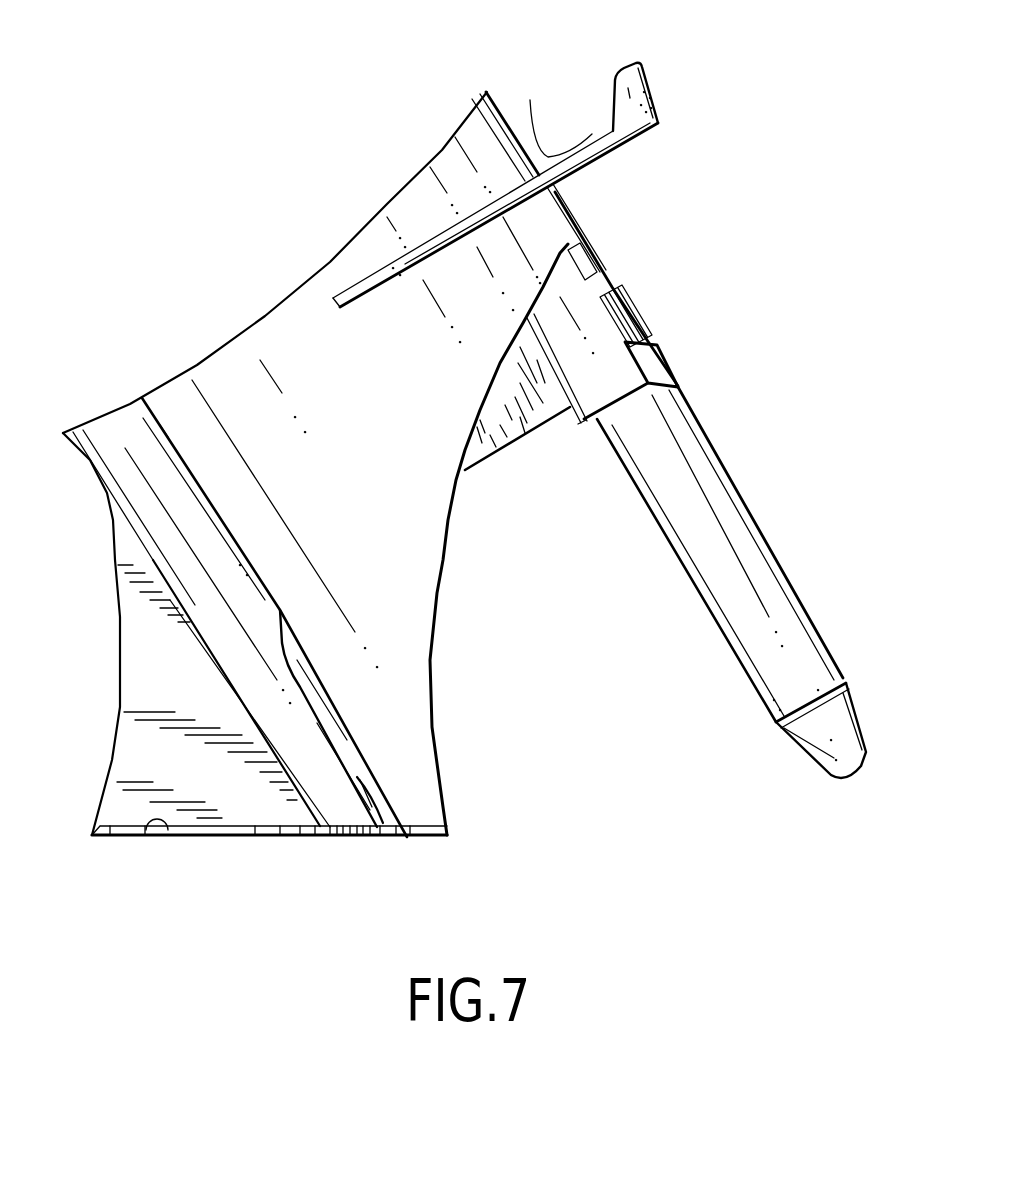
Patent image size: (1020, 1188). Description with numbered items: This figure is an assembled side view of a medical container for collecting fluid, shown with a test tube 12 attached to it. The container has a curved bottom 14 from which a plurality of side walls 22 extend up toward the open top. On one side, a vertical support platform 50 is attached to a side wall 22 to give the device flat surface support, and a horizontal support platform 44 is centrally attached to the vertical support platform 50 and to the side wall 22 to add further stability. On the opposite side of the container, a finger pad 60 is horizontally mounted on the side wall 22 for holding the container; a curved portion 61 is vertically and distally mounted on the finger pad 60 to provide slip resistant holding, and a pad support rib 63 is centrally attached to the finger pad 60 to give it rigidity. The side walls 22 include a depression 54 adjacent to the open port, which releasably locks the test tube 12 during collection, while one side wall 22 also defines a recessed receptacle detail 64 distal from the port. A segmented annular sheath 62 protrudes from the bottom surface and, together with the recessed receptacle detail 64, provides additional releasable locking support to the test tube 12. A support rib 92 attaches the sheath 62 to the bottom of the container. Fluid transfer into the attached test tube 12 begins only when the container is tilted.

The test tube 12 is at (757, 500).
The curved bottom 14 is at (440, 560).
The side walls 22 is at (500, 108).
The horizontal support platform 44 is at (168, 833).
The vertical support platform 50 is at (133, 730).
The depression 54 is at (582, 268).
The finger pad 60 is at (596, 138).
The curved portion 61 is at (642, 98).
The segmented annular sheath 62 is at (623, 370).
The pad support rib 63 is at (542, 150).
The recessed receptacle detail 64 is at (577, 218).
The support rib 92 is at (507, 440).